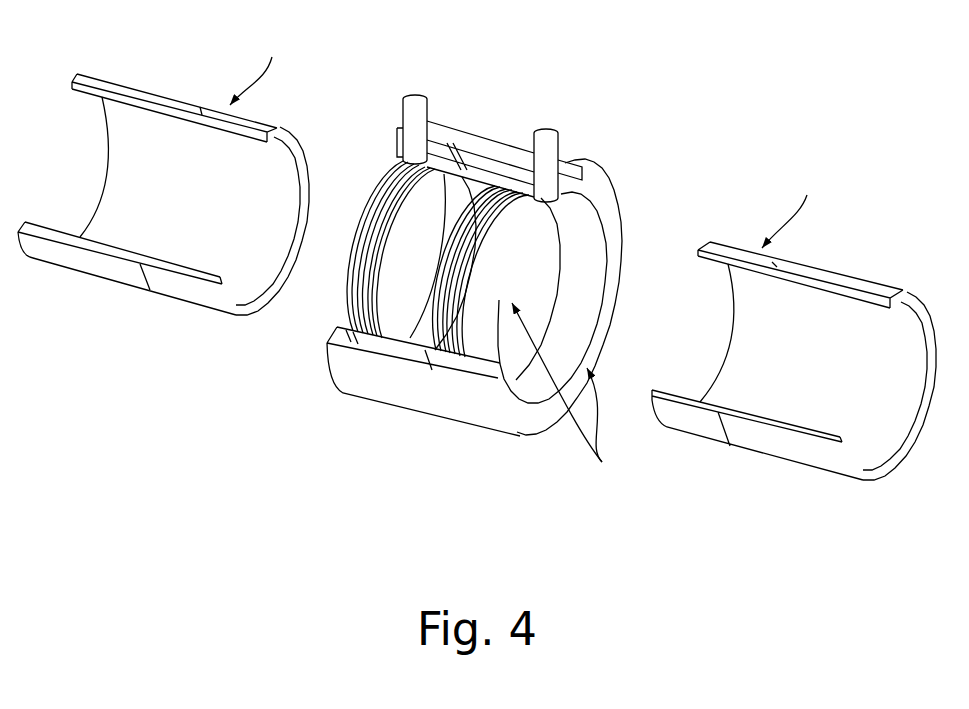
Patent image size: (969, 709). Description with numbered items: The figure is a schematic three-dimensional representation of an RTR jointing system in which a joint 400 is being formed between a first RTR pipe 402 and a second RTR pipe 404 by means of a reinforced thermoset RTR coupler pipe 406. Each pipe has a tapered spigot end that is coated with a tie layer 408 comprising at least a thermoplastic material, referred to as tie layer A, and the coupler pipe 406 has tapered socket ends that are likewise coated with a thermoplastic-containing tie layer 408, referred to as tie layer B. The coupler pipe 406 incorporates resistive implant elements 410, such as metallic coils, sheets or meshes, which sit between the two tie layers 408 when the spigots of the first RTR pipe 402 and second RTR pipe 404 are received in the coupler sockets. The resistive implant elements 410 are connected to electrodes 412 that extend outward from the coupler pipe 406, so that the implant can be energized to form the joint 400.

The joint 400 is at (727, 117).
The first RTR pipe 402 is at (82, 280).
The second outer shell half 404 is at (778, 467).
The RTR coupler pipe 406 is at (428, 417).
The tie layer 408 is at (272, 117).
The resistive implant elements 410 is at (337, 300).
The electrodes 412 is at (423, 87).